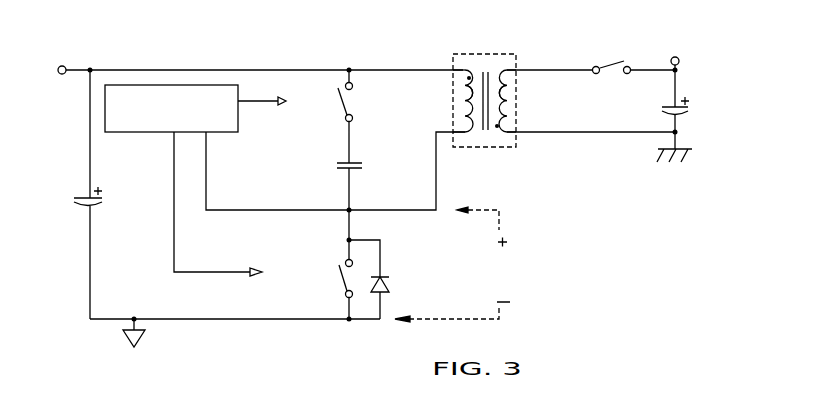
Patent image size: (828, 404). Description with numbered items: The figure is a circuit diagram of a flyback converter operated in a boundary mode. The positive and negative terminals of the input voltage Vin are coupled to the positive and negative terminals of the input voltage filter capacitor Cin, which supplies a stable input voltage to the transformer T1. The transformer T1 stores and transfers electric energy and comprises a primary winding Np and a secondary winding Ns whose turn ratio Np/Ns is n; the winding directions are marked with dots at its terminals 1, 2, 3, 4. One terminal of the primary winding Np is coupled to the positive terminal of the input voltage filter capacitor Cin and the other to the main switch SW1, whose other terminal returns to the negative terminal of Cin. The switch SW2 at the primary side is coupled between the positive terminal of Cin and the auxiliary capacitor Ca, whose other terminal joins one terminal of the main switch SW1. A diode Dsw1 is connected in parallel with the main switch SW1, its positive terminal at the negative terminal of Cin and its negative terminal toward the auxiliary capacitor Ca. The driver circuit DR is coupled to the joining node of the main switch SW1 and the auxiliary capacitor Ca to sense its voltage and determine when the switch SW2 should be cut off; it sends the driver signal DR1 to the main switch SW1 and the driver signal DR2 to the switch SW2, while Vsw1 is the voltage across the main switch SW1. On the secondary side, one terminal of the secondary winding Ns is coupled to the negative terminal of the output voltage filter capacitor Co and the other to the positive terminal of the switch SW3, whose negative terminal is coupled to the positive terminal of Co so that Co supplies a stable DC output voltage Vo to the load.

The input voltage Vin is at (64, 58).
The driver circuit DR is at (171, 108).
The driver signal DR1 is at (255, 261).
The driver signal DR2 is at (269, 115).
The input voltage filter capacitor Cin is at (106, 200).
The main switch SW1 is at (328, 279).
The switch at the primary side SW2 is at (366, 102).
The switch at the secondary side SW3 is at (606, 56).
The auxiliary capacitor Ca is at (363, 166).
The diode Dsw1 is at (408, 284).
The voltage across the main switch Vsw1 is at (463, 264).
The transformer T1 is at (485, 105).
The primary winding Np is at (450, 95).
The secondary winding Ns is at (520, 95).
The transformer terminal 1 is at (451, 61).
The transformer terminal 2 is at (451, 126).
The transformer terminal 3 is at (519, 61).
The transformer terminal 4 is at (519, 126).
The DC output voltage Vo is at (688, 56).
The output voltage filter capacitor Co is at (690, 109).